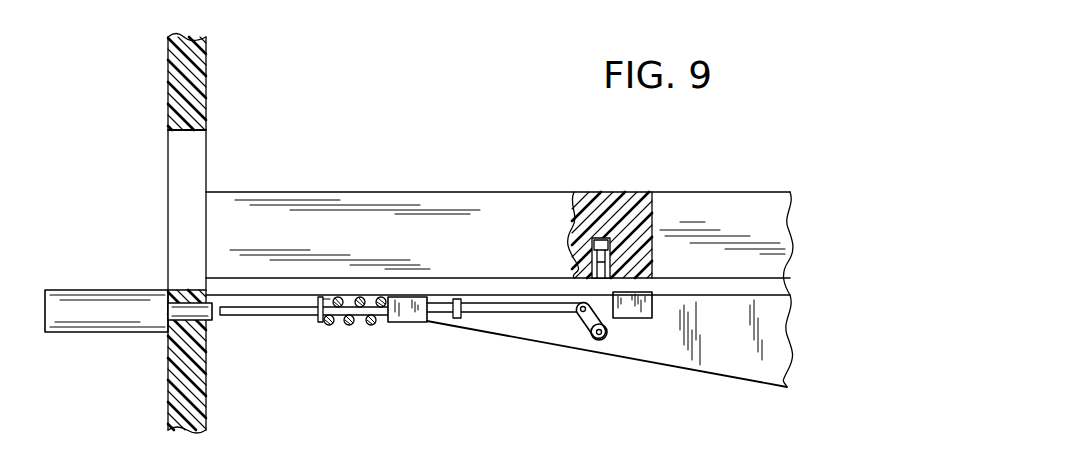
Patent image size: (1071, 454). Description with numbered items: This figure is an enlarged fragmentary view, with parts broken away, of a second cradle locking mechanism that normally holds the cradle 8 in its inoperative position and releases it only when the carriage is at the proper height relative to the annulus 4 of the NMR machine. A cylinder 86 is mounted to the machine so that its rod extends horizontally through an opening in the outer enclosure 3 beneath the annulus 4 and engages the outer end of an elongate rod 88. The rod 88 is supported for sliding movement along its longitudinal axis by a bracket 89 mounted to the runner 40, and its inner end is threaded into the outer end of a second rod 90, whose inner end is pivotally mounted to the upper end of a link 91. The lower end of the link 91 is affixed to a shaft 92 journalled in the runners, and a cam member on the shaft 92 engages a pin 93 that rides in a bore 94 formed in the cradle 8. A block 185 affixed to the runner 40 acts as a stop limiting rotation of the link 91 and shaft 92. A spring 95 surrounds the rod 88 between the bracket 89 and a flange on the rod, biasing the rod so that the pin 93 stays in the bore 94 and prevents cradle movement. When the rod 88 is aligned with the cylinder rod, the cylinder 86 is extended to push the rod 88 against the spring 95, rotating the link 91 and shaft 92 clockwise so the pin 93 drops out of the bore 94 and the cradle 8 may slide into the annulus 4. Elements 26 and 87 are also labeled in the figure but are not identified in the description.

The outer enclosure 3 is at (210, 98).
The annulus 4 is at (188, 130).
The cradle 8 is at (743, 190).
The compression spring 26 is at (323, 323).
The runner 40 is at (778, 330).
The cylinder 86 is at (135, 290).
The shaft 87 is at (210, 320).
The elongate rod 88 is at (276, 318).
The bracket 89 is at (410, 308).
The second rod 90 is at (497, 312).
The link 91 is at (578, 323).
The shaft 92 is at (597, 340).
The pin 93 is at (592, 264).
The bore 94 is at (598, 238).
The spring 95 is at (362, 298).
The block 185 is at (653, 318).